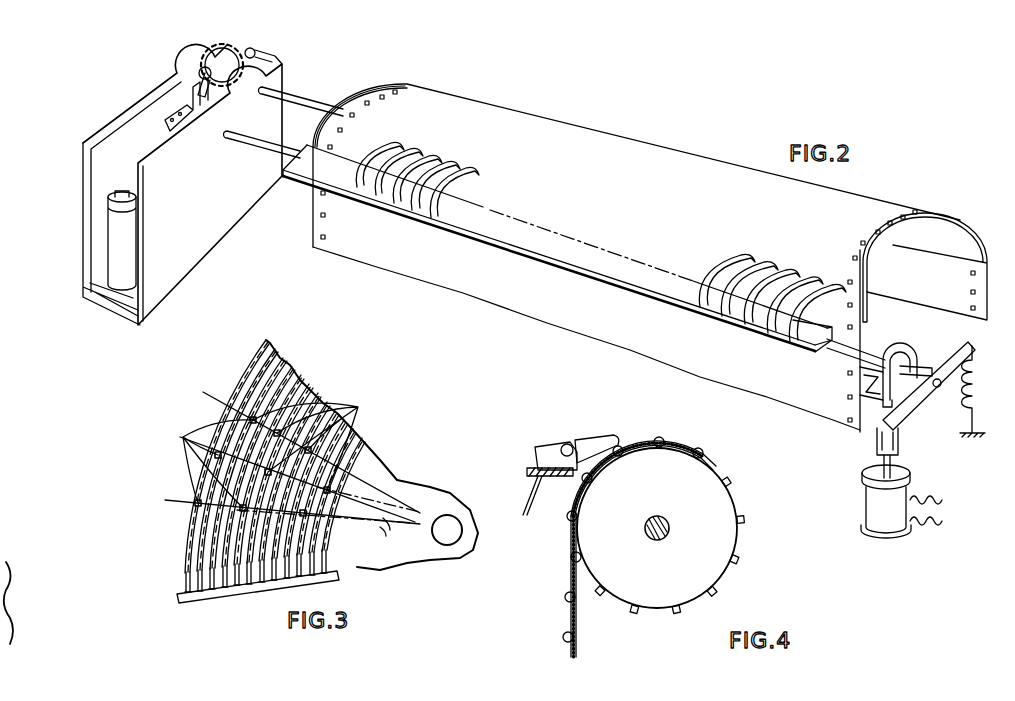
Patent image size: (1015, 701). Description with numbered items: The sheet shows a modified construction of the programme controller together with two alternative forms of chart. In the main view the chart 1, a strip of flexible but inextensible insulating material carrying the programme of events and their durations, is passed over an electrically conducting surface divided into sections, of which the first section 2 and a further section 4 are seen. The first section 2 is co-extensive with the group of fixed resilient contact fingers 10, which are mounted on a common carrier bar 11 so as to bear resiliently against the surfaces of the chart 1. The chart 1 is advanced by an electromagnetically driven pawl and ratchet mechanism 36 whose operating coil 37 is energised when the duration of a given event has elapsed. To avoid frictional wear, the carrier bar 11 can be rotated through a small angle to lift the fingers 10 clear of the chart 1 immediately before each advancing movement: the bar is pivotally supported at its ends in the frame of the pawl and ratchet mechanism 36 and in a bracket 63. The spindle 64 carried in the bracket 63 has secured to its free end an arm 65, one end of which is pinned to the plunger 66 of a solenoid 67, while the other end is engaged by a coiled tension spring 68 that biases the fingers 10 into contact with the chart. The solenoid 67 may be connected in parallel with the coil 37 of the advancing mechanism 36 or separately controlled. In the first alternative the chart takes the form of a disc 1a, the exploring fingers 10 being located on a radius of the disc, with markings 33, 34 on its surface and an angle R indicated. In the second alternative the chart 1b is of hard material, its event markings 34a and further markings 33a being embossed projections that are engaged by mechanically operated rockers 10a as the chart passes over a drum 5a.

In FIG. 2, the chart 1 is at (629, 197).
In FIG. 3, the disc 1a is at (394, 478).
In FIG. 4, the chart 1b is at (578, 640).
In FIG. 2, the first section 2 is at (326, 127).
In FIG. 2, the section 4 is at (871, 310).
In FIG. 4, the drum 5a is at (731, 532).
In FIG. 2, the contact fingers 10 is at (485, 189).
In FIG. 3, the contact fingers 10 is at (180, 582).
In FIG. 4, the rockers 10a is at (599, 436).
In FIG. 2, the common carrier bar 11 is at (587, 272).
In FIG. 3, the common carrier bar 11 is at (178, 599).
In FIG. 4, the common carrier bar 11 is at (527, 472).
In FIG. 3, the cross lines 33 is at (285, 458).
In FIG. 4, the peg 33a is at (664, 442).
In FIG. 3, the fan lines 34 is at (314, 442).
In FIG. 4, the event markings 34a is at (622, 448).
In FIG. 2, the pawl and ratchet mechanism 36 is at (230, 41).
In FIG. 2, the operating coil 37 is at (120, 250).
In FIG. 2, the bracket 63 is at (911, 357).
In FIG. 2, the spindle 64 is at (834, 356).
In FIG. 2, the arm 65 is at (931, 402).
In FIG. 2, the plunger 66 is at (877, 455).
In FIG. 2, the solenoid 67 is at (863, 503).
In FIG. 2, the coiled tension spring 68 is at (981, 380).
In FIG. 3, the angle R is at (383, 535).